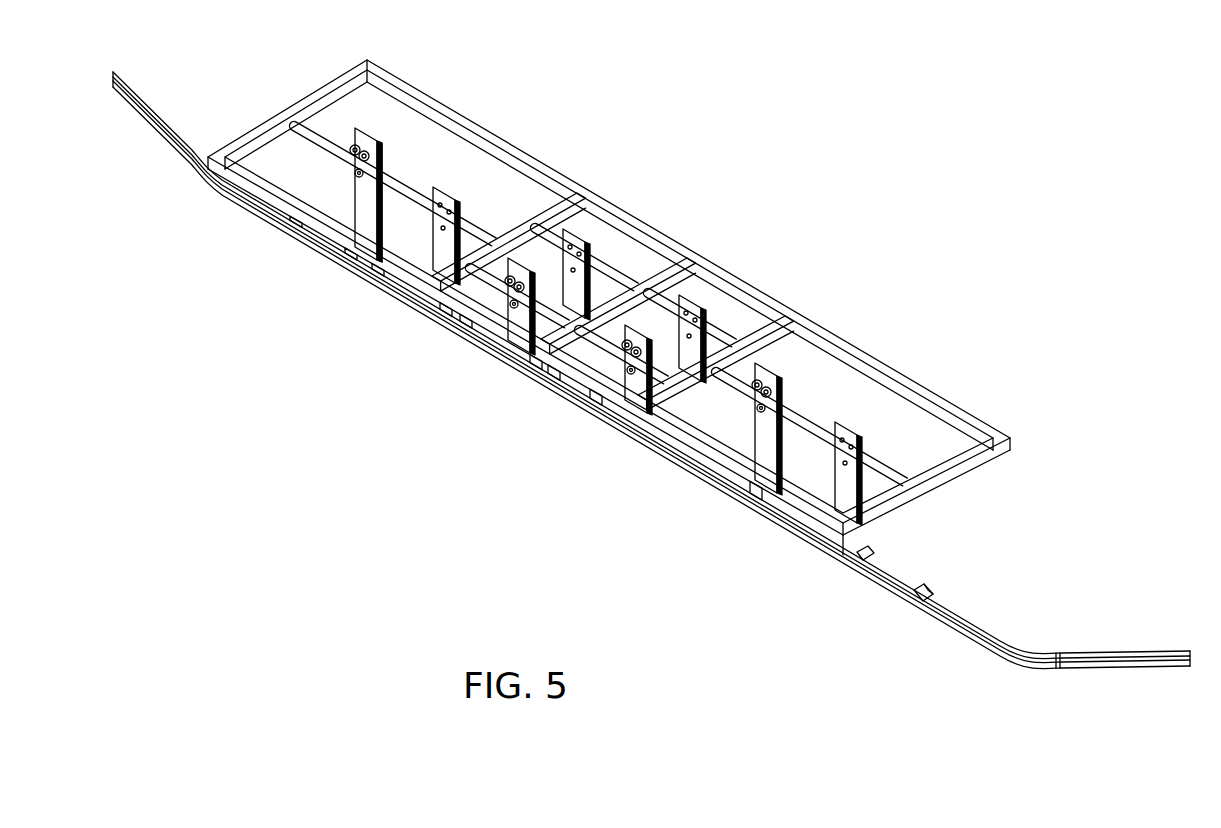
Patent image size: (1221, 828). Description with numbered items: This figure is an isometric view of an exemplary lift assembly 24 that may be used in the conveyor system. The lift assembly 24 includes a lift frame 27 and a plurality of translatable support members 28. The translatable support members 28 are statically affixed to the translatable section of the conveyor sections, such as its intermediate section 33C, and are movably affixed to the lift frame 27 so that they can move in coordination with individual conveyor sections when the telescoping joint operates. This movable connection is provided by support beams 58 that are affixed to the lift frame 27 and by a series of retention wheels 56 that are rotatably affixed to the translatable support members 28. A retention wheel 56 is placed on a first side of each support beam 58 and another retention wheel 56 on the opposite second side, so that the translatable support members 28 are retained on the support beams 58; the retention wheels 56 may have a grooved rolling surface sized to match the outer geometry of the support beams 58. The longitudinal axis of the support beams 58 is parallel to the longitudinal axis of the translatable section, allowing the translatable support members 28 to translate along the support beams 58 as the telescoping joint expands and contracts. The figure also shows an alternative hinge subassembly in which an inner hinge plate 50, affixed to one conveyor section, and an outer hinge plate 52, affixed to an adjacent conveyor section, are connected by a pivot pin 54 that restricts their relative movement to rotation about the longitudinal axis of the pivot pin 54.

The lift assembly 24 is at (977, 212).
The lift frame 27 is at (933, 393).
The translatable support member 28 is at (357, 203).
The intermediate section 33C is at (398, 357).
The inner hinge plate 50 is at (940, 600).
The outer hinge plate 52 is at (918, 593).
The pivot pin 54 is at (926, 593).
The retention wheel 56 is at (351, 146).
The support beam 58 is at (798, 405).